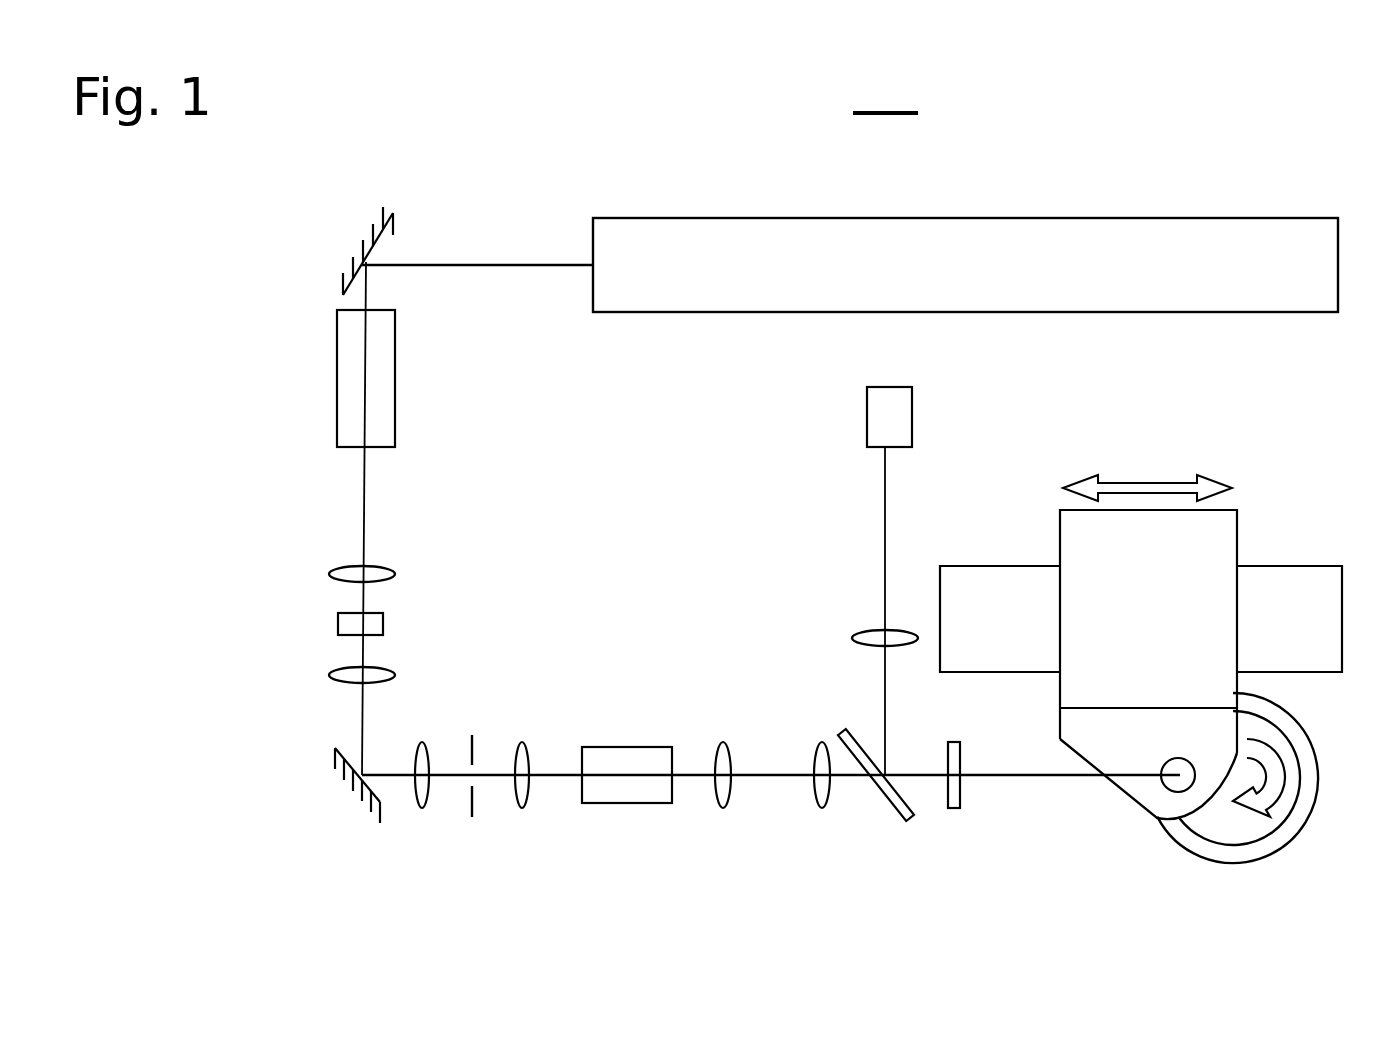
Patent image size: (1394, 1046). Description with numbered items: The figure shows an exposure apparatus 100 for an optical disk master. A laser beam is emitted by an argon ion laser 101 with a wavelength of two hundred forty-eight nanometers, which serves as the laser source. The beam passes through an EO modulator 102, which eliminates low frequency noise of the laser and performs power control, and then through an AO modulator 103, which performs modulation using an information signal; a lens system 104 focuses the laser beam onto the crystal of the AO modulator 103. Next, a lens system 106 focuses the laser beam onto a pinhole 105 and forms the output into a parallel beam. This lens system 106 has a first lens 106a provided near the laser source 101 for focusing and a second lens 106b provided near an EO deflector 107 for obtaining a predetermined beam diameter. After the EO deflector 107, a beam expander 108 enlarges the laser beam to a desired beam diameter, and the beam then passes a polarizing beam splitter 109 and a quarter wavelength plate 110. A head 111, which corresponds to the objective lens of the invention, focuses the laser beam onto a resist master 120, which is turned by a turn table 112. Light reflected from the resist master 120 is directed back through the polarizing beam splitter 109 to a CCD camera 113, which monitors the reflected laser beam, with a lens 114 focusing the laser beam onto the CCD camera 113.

The exposure apparatus 100 is at (885, 91).
The argon ion laser 101 is at (1198, 218).
The EO modulator 102 is at (395, 378).
The AO modulator 103 is at (383, 624).
The lens system 104 is at (395, 570).
The pinhole 105 is at (470, 820).
The lens system 106 is at (512, 714).
The first lens 106a is at (425, 744).
The second lens 106b is at (515, 663).
The EO deflector 107 is at (625, 805).
The beam expander 108 is at (722, 810).
The polarizing beam splitter 109 is at (885, 820).
The ¼ wavelength plate 110 is at (953, 810).
The head 111 is at (1227, 532).
The turn table 112 is at (1185, 838).
The CCD camera 113 is at (867, 413).
The lens 114 is at (857, 636).
The resist master 120 is at (1253, 730).